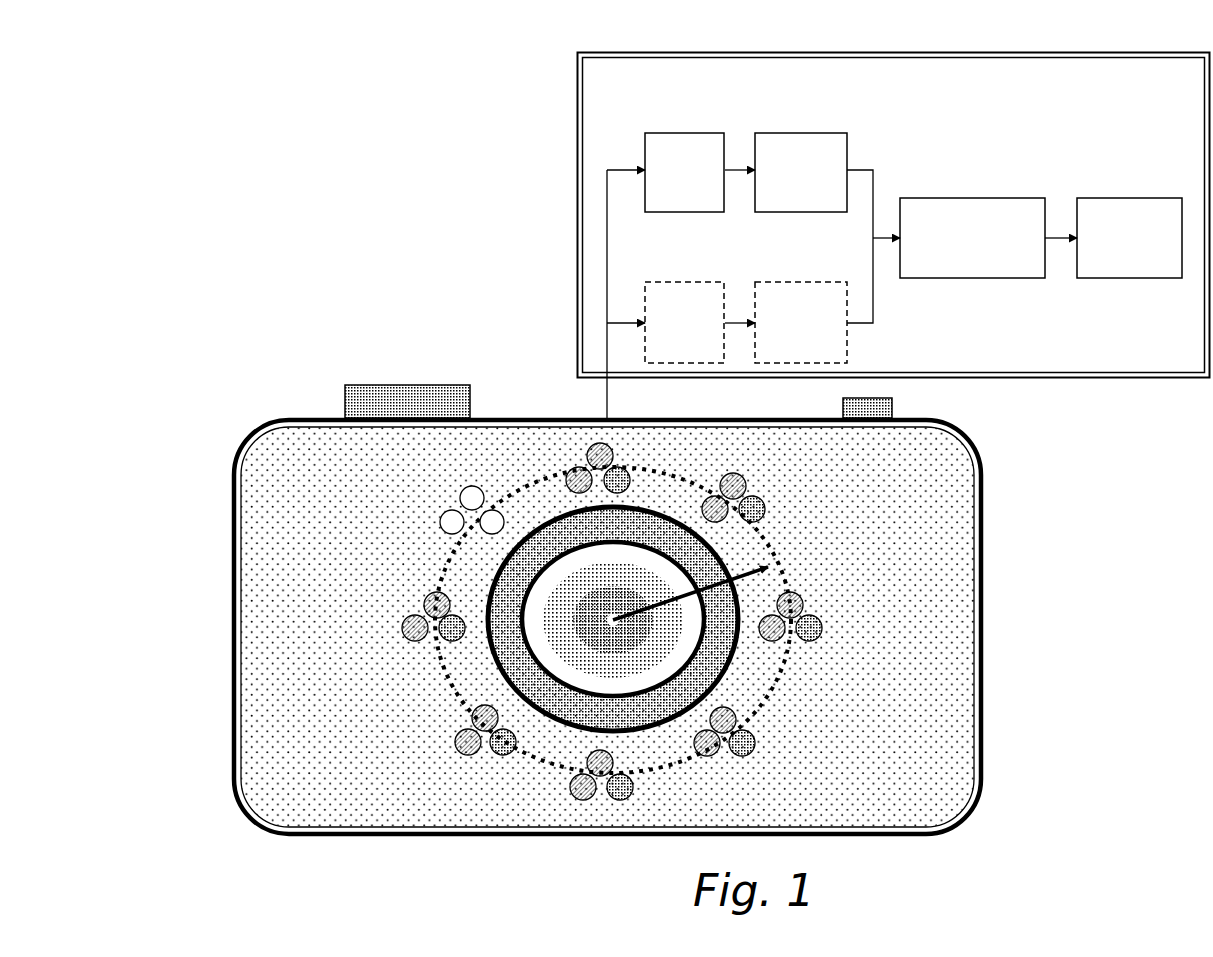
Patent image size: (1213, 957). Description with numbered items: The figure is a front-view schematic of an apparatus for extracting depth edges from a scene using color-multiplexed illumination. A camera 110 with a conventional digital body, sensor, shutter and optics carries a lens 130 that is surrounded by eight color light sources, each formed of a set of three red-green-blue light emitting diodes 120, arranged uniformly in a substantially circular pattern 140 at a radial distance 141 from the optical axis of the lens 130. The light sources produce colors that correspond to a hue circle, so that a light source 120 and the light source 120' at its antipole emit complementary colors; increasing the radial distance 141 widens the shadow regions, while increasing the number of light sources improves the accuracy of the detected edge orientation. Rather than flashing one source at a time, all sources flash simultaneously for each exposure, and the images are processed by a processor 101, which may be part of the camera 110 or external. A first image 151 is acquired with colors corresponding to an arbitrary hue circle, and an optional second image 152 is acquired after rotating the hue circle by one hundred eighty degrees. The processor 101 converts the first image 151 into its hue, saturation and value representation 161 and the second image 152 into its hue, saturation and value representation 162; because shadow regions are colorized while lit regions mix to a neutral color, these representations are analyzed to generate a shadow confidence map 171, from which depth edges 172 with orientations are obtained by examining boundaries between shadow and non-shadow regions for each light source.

The processor 101 is at (577, 178).
The camera 110 is at (981, 522).
The RGB light emitting diodes 120 is at (628, 621).
The complementary light source 120' is at (418, 736).
The lens 130 is at (680, 653).
The substantially circular pattern 140 is at (768, 708).
The radial distance 141 is at (779, 563).
The first image M1 151 is at (687, 133).
The second image M2 152 is at (697, 282).
The HSV representation of first image 161 is at (787, 133).
The HSV representation of second image 162 is at (799, 282).
The shadow confidence map 171 is at (917, 198).
The depth edges 172 is at (1089, 198).